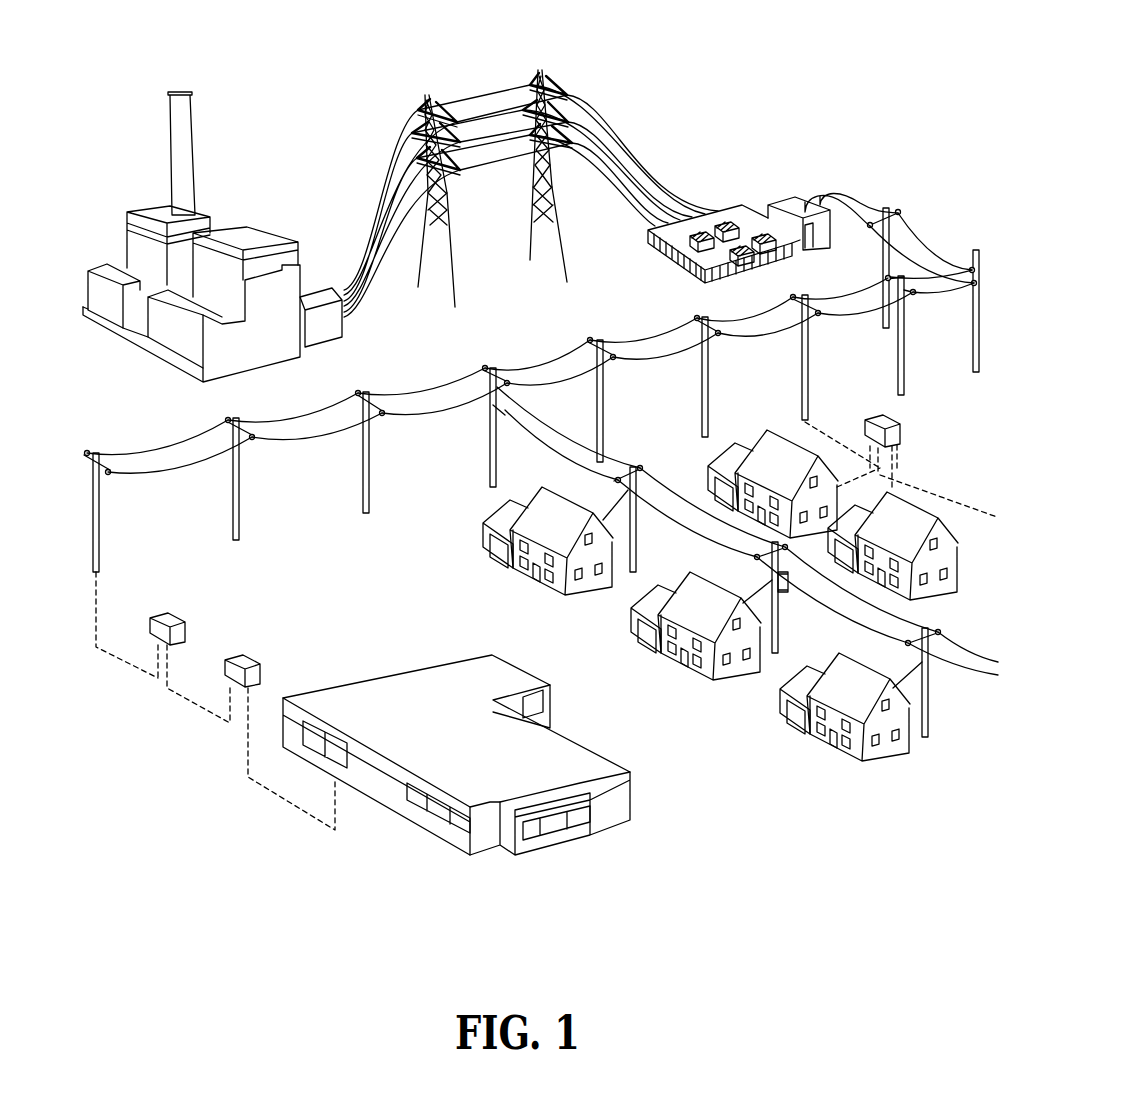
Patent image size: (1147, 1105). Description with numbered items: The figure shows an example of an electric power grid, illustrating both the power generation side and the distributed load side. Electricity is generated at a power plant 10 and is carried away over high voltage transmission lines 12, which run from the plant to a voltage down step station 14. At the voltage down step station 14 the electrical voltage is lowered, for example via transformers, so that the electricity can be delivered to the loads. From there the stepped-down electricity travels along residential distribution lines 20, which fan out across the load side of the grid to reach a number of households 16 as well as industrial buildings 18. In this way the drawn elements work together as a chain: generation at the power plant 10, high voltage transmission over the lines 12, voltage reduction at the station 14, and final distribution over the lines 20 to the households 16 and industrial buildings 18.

The power plant 10 is at (253, 186).
The high voltage transmission lines 12 is at (479, 85).
The voltage down step station 14 is at (735, 186).
The households 16 is at (505, 577).
The industrial buildings 18 is at (421, 701).
The residential distribution lines 20 is at (447, 398).